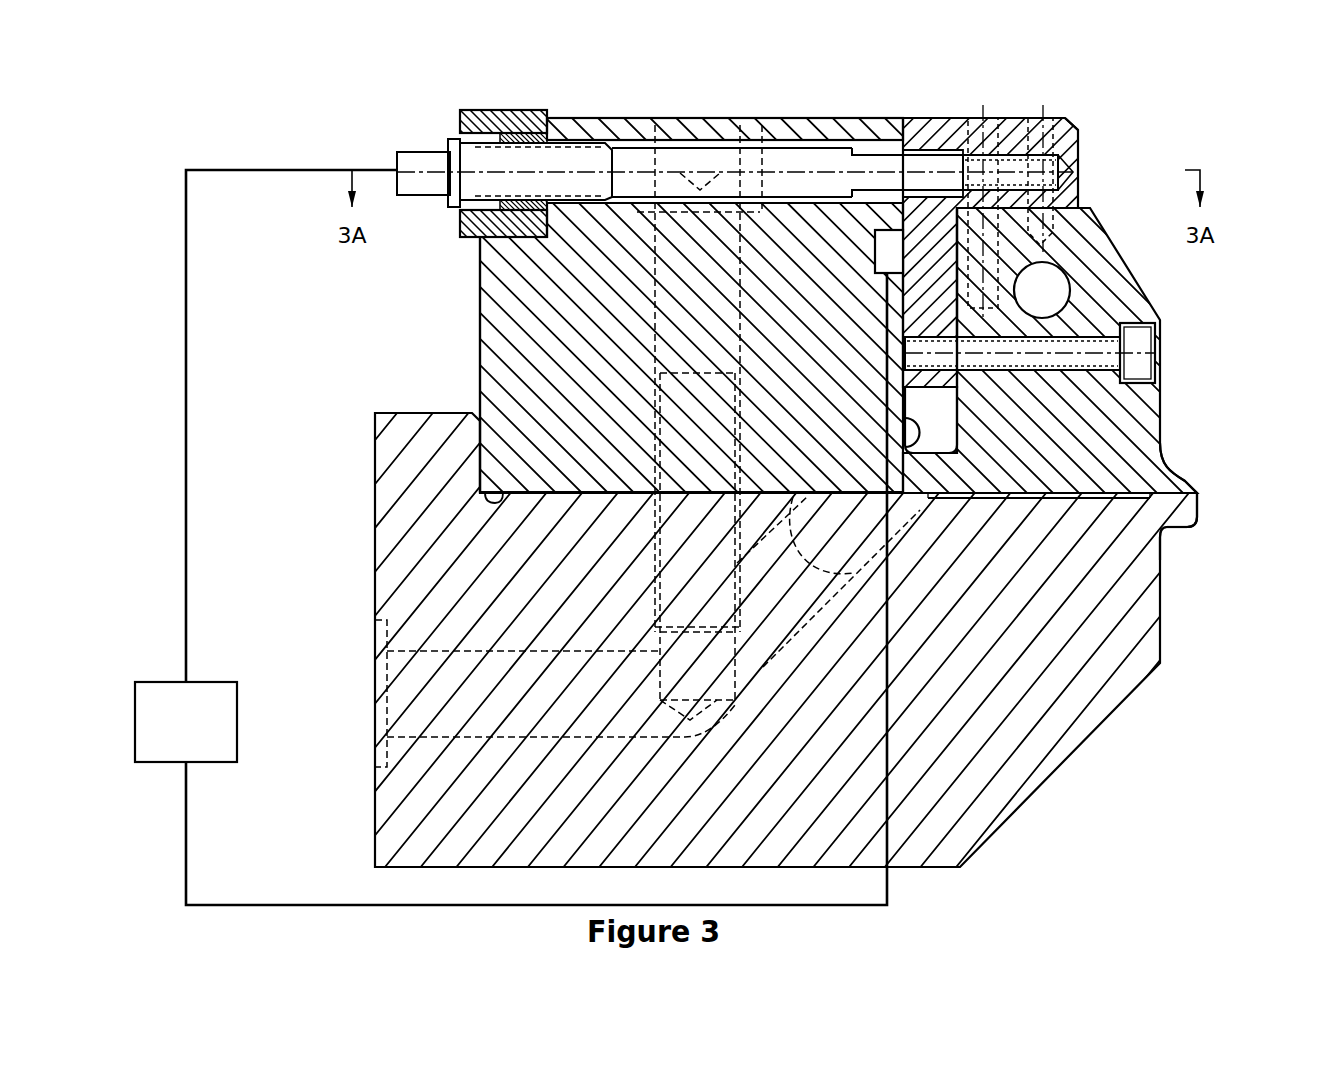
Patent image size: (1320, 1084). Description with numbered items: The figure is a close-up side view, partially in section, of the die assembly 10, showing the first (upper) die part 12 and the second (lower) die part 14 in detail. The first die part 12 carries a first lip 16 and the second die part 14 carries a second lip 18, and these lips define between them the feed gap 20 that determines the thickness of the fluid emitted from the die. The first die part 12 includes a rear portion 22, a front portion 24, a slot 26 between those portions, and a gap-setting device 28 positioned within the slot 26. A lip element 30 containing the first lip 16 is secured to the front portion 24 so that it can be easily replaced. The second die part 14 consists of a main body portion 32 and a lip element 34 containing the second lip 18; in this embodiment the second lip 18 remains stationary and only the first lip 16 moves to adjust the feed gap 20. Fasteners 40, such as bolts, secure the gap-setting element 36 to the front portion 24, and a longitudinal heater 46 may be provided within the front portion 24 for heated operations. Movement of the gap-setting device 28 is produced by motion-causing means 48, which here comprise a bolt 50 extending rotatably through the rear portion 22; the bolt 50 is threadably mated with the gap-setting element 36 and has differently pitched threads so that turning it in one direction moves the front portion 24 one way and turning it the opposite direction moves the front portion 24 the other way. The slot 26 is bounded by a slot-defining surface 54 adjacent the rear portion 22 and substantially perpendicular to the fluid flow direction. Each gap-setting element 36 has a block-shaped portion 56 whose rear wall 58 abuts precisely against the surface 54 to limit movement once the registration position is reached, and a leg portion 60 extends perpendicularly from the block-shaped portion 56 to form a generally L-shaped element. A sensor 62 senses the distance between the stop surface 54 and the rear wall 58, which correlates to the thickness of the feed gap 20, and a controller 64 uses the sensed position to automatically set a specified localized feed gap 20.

The die assembly 10 is at (1057, 100).
The first die part 12 is at (478, 358).
The second die part 14 is at (1045, 790).
The first lip 16 is at (1200, 494).
The second lip 18 is at (1185, 528).
The feed gap 20 is at (1200, 517).
The rear portion 22 is at (515, 340).
The front portion 24 is at (1110, 296).
The slot 26 is at (945, 417).
The gap-setting device 28 is at (968, 113).
The lip element 30 is at (1180, 458).
The main body portion 32 is at (420, 826).
The lip element 34 is at (1165, 542).
The gap-setting element 36 is at (940, 113).
The fasteners 40 is at (995, 118).
The longitudinal heater 46 is at (1050, 280).
The motion-causing means 48 is at (432, 160).
The bolt 50 is at (585, 160).
The slot-defining surface 54 is at (905, 432).
The block-shaped portion 56 is at (923, 310).
The rear wall 58 is at (903, 330).
The leg portion 60 is at (1070, 160).
The sensor 62 is at (893, 230).
The controller 64 is at (173, 734).